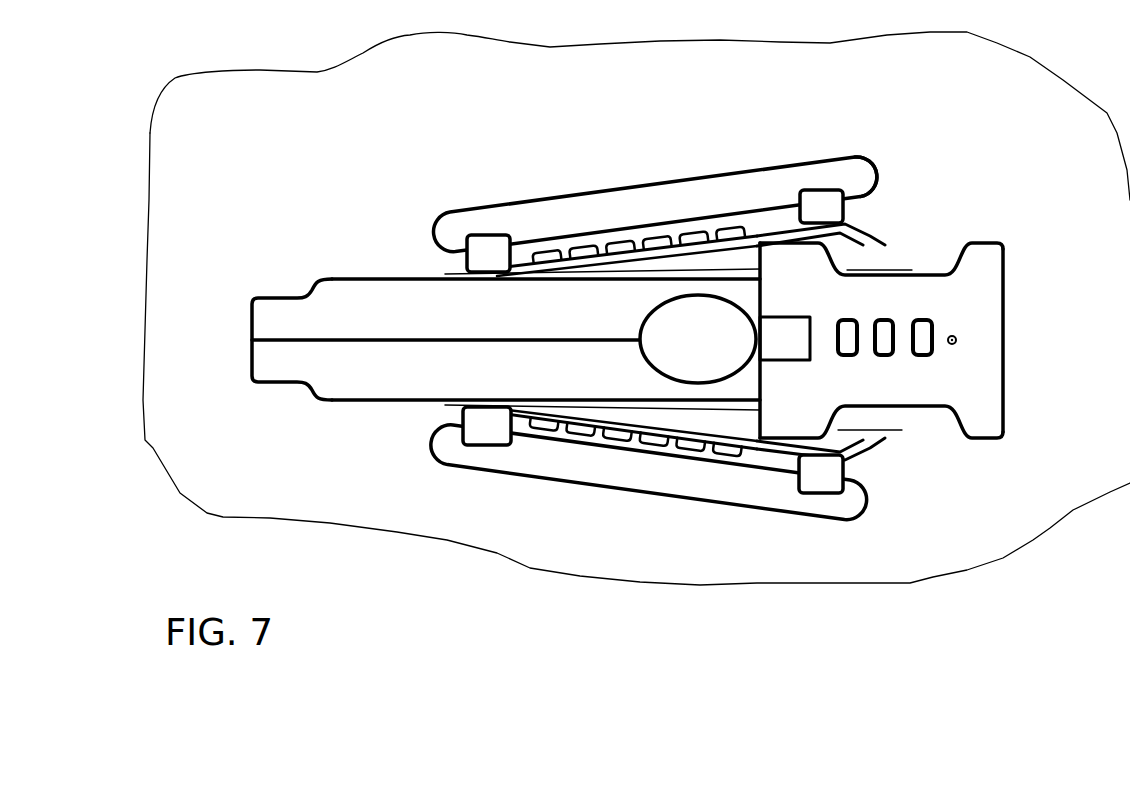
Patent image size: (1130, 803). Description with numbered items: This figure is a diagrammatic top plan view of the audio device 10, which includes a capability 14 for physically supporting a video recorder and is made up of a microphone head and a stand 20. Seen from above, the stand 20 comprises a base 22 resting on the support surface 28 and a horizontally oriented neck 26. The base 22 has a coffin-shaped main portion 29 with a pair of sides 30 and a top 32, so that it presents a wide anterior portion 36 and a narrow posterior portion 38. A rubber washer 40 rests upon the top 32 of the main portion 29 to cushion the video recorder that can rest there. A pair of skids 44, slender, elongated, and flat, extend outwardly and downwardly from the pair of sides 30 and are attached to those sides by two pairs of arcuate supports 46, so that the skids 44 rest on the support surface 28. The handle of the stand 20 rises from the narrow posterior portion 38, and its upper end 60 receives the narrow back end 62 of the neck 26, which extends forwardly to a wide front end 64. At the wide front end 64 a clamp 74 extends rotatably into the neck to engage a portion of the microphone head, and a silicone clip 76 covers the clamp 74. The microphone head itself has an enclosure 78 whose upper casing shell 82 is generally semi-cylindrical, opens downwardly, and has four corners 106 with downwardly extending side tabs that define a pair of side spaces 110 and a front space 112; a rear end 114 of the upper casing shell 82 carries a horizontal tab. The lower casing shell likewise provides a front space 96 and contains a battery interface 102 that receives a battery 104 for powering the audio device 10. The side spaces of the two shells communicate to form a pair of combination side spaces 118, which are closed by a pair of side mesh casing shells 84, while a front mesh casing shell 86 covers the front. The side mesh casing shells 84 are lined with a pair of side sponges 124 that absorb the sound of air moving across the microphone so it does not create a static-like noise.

The audio device 10 is at (247, 159).
The capability for physically supporting a video recorder 14 is at (876, 471).
The stand 20 is at (240, 293).
The base 22 is at (853, 222).
The neck 26 is at (365, 320).
The support surface 28 is at (430, 102).
The main portion 29 is at (757, 243).
The pair of sides 30 is at (588, 250).
The top 32 is at (700, 247).
The wide anterior portion 36 is at (833, 207).
The narrow posterior portion 38 is at (443, 277).
The rubber washer 40 is at (638, 250).
The pair of skids 44 is at (530, 220).
The arcuate supports 46 is at (485, 258).
The upper end 60 is at (285, 312).
The narrow back end 62 is at (313, 350).
The wide front end 64 is at (707, 390).
The clamp 74 is at (720, 344).
The silicone clip 76 is at (658, 353).
The enclosure 78 is at (980, 233).
The upper casing shell 82 is at (983, 428).
The pair of side mesh casing shells 84 is at (904, 340).
The front mesh casing shell 86 is at (1043, 336).
The front space 96 is at (1005, 347).
The battery interface 102 is at (1047, 398).
The battery 104 is at (967, 383).
The four corners 106 is at (877, 330).
The pair of side spaces 110 is at (885, 338).
The front space 112 is at (1003, 365).
The rear end 114 is at (755, 289).
The pair of combination side spaces 118 is at (875, 341).
The pair of side sponges 124 is at (927, 258).